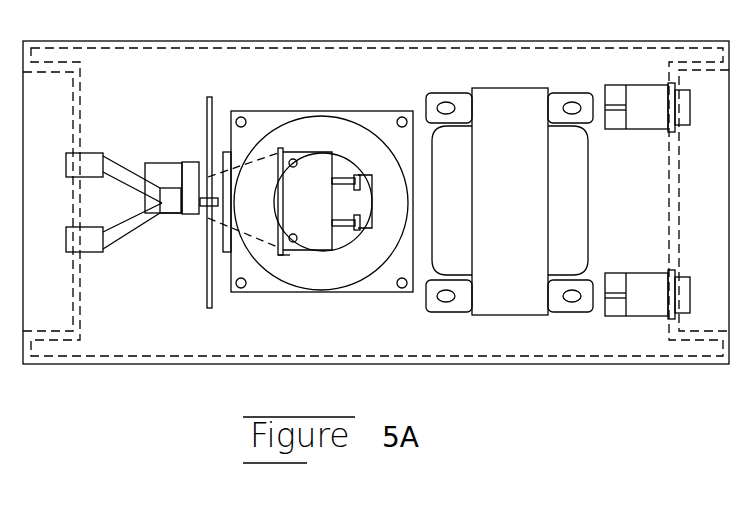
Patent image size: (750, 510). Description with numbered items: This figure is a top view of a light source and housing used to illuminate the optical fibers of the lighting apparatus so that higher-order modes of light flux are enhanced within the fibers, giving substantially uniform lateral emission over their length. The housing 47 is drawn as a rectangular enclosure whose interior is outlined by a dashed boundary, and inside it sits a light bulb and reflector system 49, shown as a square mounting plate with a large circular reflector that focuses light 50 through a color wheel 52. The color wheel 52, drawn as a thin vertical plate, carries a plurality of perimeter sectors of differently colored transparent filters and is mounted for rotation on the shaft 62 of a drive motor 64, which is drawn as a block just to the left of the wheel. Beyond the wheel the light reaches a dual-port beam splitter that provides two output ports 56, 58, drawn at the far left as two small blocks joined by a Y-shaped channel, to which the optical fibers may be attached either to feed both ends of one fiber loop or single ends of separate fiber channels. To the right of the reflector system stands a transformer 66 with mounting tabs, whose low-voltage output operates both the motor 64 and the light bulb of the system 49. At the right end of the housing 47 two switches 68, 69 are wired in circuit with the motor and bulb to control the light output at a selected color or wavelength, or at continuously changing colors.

The housing 47 is at (238, 41).
The light bulb and reflector system 49 is at (348, 282).
The light 50 is at (274, 152).
The color wheel 52 is at (207, 287).
The output port 56 is at (86, 153).
The output port 58 is at (92, 252).
The shaft 62 is at (213, 207).
The drive motor 64 is at (192, 162).
The transformer 66 is at (527, 88).
The switch 68 is at (687, 125).
The switch 69 is at (692, 258).